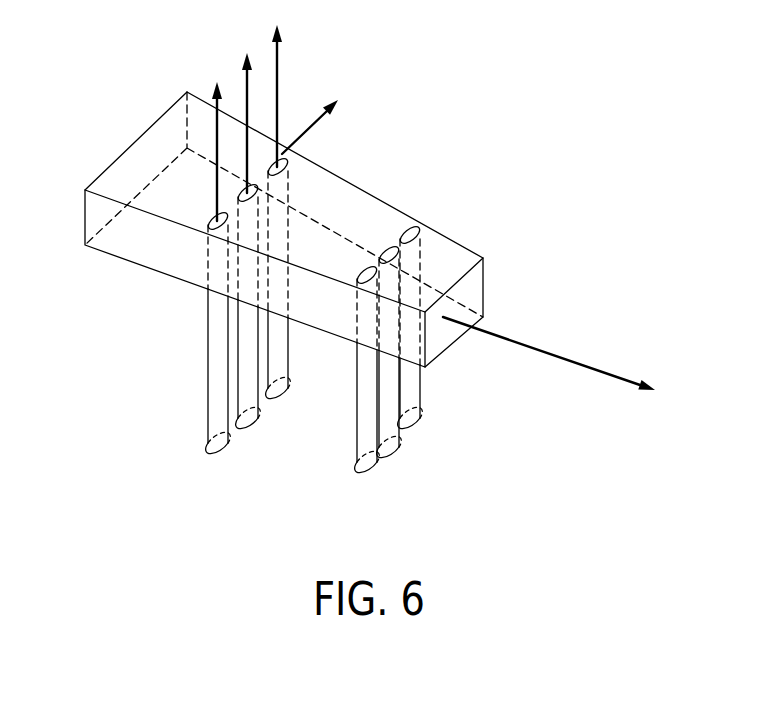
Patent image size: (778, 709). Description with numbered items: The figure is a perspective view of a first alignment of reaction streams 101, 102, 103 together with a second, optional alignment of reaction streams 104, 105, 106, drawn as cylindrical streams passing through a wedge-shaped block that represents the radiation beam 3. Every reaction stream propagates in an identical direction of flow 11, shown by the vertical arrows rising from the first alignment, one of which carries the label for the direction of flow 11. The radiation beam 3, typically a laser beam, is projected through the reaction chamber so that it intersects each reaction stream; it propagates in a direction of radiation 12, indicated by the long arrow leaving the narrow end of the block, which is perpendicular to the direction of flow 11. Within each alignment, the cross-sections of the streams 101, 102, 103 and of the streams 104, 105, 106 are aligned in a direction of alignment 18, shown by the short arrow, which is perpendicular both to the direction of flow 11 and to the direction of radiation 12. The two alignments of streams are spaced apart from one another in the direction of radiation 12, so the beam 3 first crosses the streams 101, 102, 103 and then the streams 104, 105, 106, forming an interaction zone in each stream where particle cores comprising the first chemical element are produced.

The radiation beam 3 is at (132, 242).
The direction of flow 11 is at (278, 102).
The direction of radiation 12 is at (542, 348).
The direction of alignment 18 is at (300, 128).
The reaction stream 101 is at (222, 445).
The reaction stream 102 is at (255, 408).
The reaction stream 103 is at (285, 380).
The reaction stream 104 is at (373, 460).
The reaction stream 105 is at (395, 437).
The reaction stream 106 is at (418, 412).